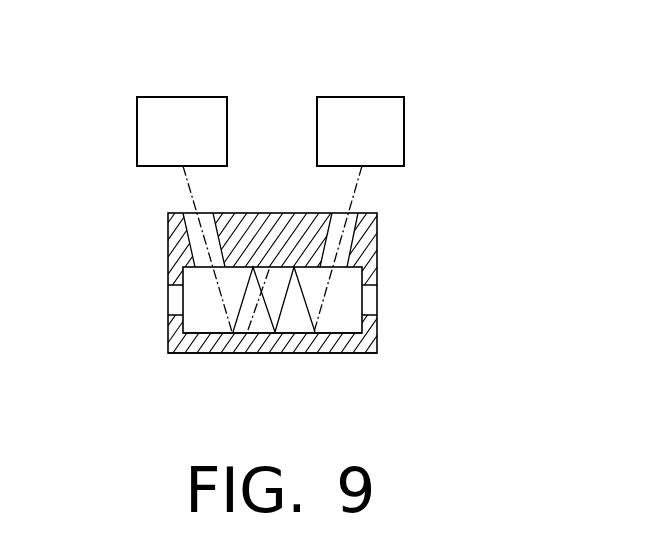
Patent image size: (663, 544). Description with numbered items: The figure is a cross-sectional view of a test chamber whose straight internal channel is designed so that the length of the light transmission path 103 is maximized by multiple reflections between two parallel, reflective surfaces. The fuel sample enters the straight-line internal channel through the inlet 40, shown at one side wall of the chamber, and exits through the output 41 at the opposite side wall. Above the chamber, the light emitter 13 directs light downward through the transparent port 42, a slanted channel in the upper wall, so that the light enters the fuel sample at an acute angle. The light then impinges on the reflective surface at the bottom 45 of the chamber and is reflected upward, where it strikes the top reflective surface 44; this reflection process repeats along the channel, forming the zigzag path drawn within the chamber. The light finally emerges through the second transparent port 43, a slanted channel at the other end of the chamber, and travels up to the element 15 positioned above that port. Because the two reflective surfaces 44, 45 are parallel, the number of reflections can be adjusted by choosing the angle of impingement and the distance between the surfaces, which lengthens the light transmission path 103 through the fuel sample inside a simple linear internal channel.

The light emitter 13 is at (183, 97).
The light detector 15 is at (362, 97).
The inlet 40 is at (164, 298).
The output 41 is at (381, 303).
The transparent port 42 is at (182, 213).
The transparent port 43 is at (359, 213).
The top reflective surface 44 is at (293, 334).
The bottom reflective surface 45 is at (242, 334).
The light transmission path 103 is at (225, 320).